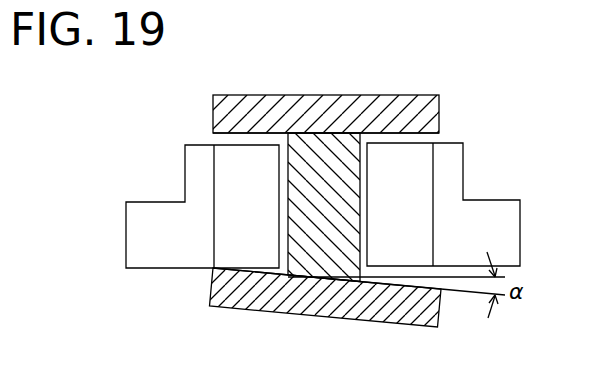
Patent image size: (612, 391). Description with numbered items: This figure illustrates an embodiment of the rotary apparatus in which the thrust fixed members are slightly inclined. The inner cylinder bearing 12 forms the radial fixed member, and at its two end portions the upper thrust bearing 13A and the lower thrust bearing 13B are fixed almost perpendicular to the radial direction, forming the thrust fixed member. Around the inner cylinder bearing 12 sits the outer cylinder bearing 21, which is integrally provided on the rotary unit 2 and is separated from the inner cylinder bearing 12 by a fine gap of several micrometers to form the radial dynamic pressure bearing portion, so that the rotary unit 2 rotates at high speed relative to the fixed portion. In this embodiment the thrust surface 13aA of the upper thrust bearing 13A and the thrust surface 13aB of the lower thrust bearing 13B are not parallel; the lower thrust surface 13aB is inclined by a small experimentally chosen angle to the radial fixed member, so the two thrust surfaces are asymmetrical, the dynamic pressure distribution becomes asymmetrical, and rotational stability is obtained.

The upper thrust bearing 13A is at (434, 114).
The thrust surface of the upper thrust bearing 13aA is at (410, 136).
The inner cylinder bearing 12 is at (323, 248).
The lower thrust bearing 13B is at (263, 303).
The thrust surface of the lower thrust bearing 13aB is at (412, 291).
The outer cylinder bearing 21 is at (226, 227).
The rotary unit 2 is at (530, 221).